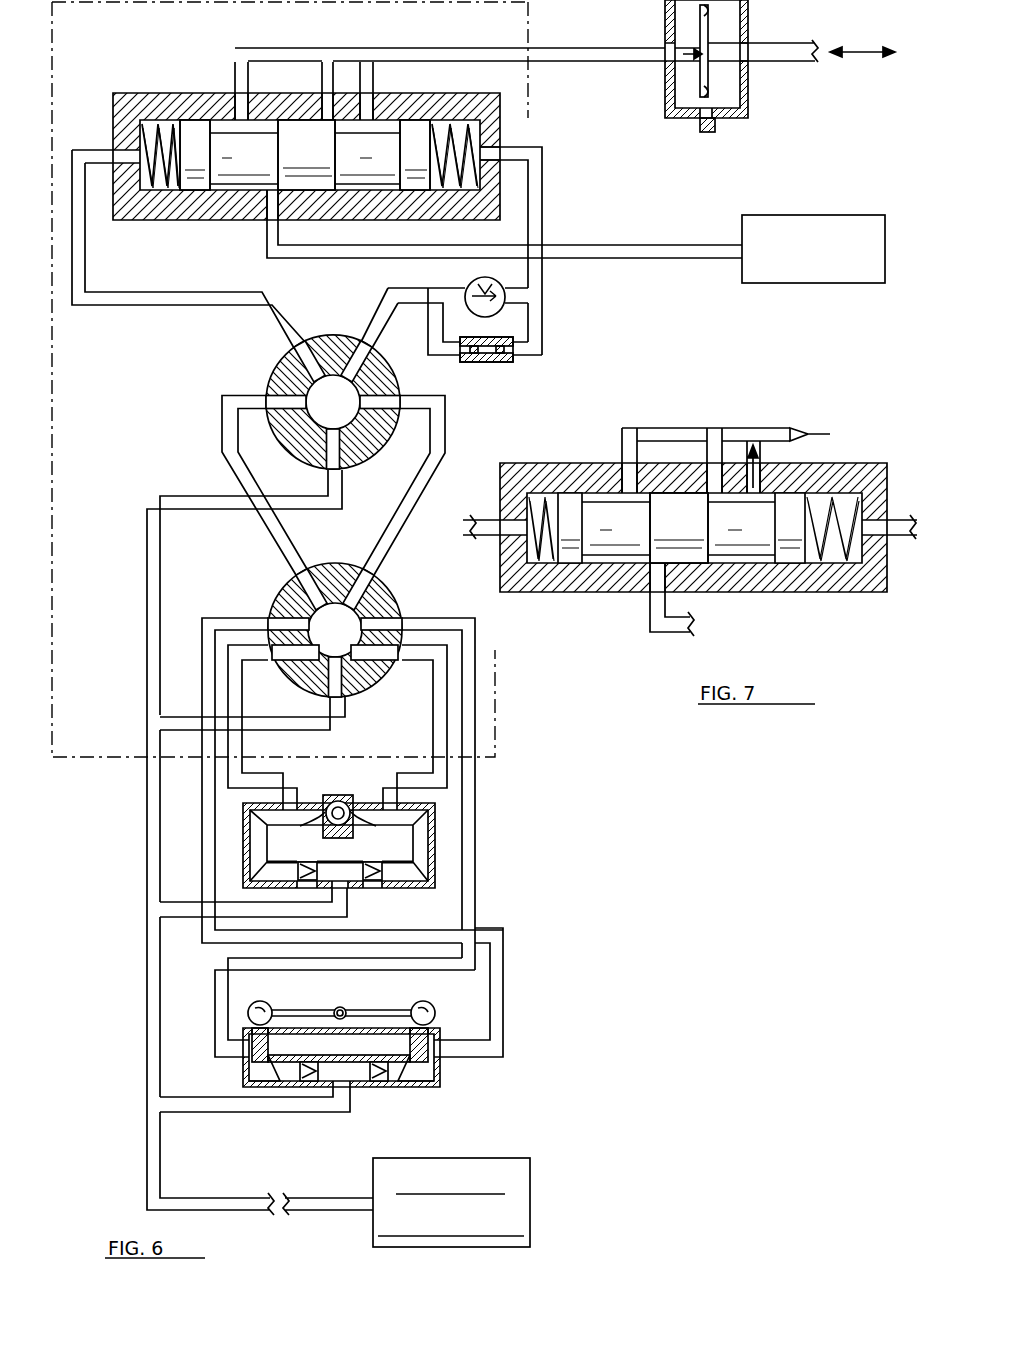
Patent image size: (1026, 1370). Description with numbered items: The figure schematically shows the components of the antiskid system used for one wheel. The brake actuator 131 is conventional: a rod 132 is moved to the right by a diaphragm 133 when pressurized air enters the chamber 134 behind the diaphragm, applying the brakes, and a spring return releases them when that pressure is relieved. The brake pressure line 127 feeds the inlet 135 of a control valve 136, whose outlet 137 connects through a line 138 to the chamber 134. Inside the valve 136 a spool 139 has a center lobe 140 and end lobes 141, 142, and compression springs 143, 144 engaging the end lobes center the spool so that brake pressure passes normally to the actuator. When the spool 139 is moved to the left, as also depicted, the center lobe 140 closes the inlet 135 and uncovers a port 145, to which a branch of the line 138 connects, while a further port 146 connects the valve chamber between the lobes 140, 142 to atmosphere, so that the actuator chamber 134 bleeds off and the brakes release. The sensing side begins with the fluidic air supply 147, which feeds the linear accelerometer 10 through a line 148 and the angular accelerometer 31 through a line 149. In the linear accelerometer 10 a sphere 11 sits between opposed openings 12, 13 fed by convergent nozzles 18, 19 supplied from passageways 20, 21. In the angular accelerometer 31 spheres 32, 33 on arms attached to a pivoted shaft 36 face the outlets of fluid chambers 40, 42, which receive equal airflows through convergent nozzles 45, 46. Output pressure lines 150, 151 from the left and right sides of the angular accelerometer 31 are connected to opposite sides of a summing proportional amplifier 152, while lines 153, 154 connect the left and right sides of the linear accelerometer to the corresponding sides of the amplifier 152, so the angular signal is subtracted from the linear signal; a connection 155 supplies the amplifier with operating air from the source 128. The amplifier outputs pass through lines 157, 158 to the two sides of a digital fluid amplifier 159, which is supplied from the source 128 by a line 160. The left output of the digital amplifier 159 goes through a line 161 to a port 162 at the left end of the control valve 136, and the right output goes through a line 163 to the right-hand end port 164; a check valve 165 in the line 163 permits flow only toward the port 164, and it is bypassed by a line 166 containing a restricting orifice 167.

In FIG. 6, the linear accelerometer 10 is at (432, 884).
In FIG. 6, the sphere 11 is at (336, 796).
In FIG. 6, the opening 12 is at (312, 828).
In FIG. 6, the opening 13 is at (364, 828).
In FIG. 6, the convergent fluid nozzle 18 is at (302, 868).
In FIG. 6, the convergent fluid nozzle 19 is at (372, 878).
In FIG. 6, the passageway 20 is at (255, 832).
In FIG. 6, the passageway 21 is at (420, 838).
In FIG. 6, the angular accelerometer 31 is at (442, 1080).
In FIG. 6, the sphere 32 is at (264, 1002).
In FIG. 6, the sphere 33 is at (436, 1002).
In FIG. 6, the shaft 36 is at (344, 1005).
In FIG. 6, the fluid chamber 40 is at (262, 1042).
In FIG. 6, the fluid chamber 42 is at (414, 1042).
In FIG. 6, the convergent nozzle 45 is at (310, 1068).
In FIG. 6, the convergent nozzle 46 is at (352, 1090).
In FIG. 6, the brake pressure line 127 is at (640, 243).
In FIG. 7, the brake pressure line 127 is at (680, 632).
In FIG. 6, the source of pressurized air 128 is at (812, 216).
In FIG. 6, the actuator 131 is at (682, 122).
In FIG. 6, the rod 132 is at (775, 62).
In FIG. 6, the diaphragm 133 is at (700, 30).
In FIG. 6, the chamber 134 is at (688, 75).
In FIG. 6, the inlet 135 is at (272, 196).
In FIG. 7, the inlet 135 is at (642, 572).
In FIG. 6, the control valve 136 is at (131, 84).
In FIG. 7, the control valve 136 is at (882, 460).
In FIG. 6, the outlet 137 is at (240, 100).
In FIG. 7, the outlet 137 is at (625, 480).
In FIG. 6, the line 138 is at (410, 48).
In FIG. 7, the line 138 is at (780, 425).
In FIG. 6, the spool 139 is at (372, 130).
In FIG. 7, the spool 139 is at (735, 558).
In FIG. 6, the center lobe 140 is at (306, 155).
In FIG. 7, the center lobe 140 is at (679, 528).
In FIG. 6, the end lobe 141 is at (190, 178).
In FIG. 6, the end lobe 142 is at (432, 124).
In FIG. 6, the compression spring 143 is at (160, 130).
In FIG. 7, the compression spring 143 is at (545, 565).
In FIG. 6, the compression spring 144 is at (440, 128).
In FIG. 7, the compression spring 144 is at (818, 560).
In FIG. 6, the port 145 is at (326, 100).
In FIG. 7, the port 145 is at (712, 480).
In FIG. 6, the port 146 is at (366, 100).
In FIG. 7, the port 146 is at (760, 470).
In FIG. 6, the fluidic air supply 147 is at (522, 1162).
In FIG. 6, the line 148 is at (178, 908).
In FIG. 6, the line 149 is at (235, 1105).
In FIG. 6, the output pressure line 150 is at (220, 1000).
In FIG. 6, the output pressure line 151 is at (497, 1000).
In FIG. 6, the summing proportional amplifier 152 is at (385, 585).
In FIG. 6, the line 153 is at (236, 745).
In FIG. 6, the line 154 is at (437, 738).
In FIG. 6, the connection 155 is at (346, 713).
In FIG. 6, the line 157 is at (262, 520).
In FIG. 6, the line 158 is at (440, 432).
In FIG. 6, the digital fluid amplifier 159 is at (278, 356).
In FIG. 6, the line 160 is at (182, 492).
In FIG. 6, the line 161 is at (95, 300).
In FIG. 7, the line 161 is at (478, 538).
In FIG. 6, the port 162 is at (120, 160).
In FIG. 7, the port 162 is at (518, 520).
In FIG. 6, the line 163 is at (538, 197).
In FIG. 7, the line 163 is at (905, 540).
In FIG. 6, the port 164 is at (490, 150).
In FIG. 7, the port 164 is at (882, 520).
In FIG. 6, the check valve 165 is at (466, 287).
In FIG. 6, the line 166 is at (543, 330).
In FIG. 6, the restricting orifice 167 is at (485, 362).